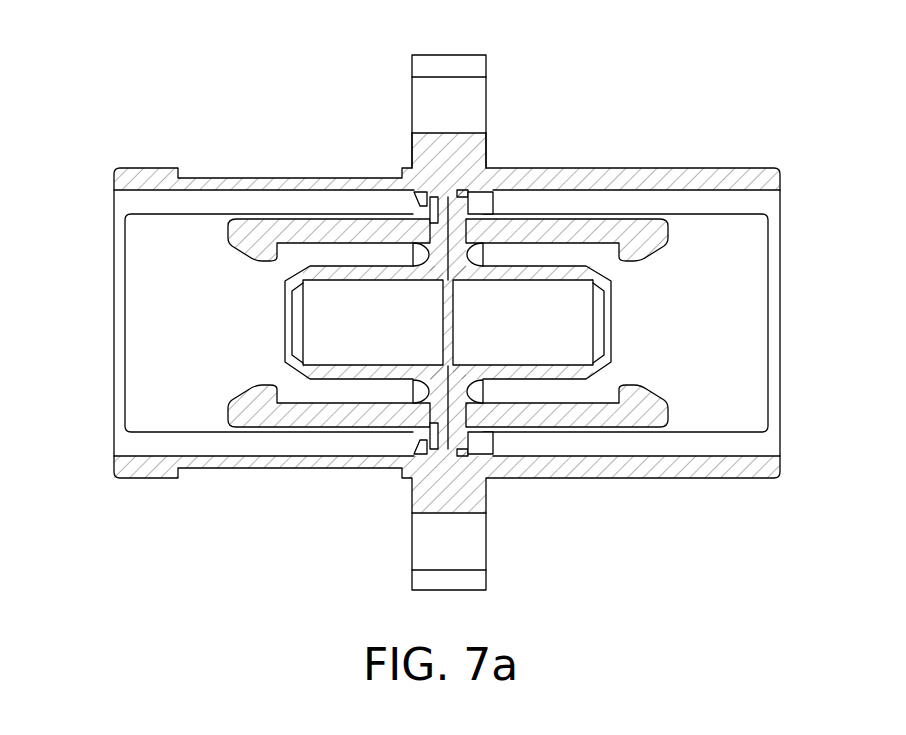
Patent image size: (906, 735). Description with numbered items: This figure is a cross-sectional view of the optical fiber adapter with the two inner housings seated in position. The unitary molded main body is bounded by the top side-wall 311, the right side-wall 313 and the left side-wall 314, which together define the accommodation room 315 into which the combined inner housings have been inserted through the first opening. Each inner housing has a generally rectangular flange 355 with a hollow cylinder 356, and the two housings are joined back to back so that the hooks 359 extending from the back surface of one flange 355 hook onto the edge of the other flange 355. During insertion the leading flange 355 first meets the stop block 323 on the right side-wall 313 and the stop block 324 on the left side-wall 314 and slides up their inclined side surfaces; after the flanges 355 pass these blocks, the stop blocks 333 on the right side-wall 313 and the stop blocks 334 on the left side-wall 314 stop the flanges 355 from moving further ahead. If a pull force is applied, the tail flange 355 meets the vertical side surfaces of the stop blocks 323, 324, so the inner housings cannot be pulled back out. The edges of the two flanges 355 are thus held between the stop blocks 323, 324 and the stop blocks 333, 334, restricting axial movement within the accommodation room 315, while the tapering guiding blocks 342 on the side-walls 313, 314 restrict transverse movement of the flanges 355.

The top side-wall 311 is at (122, 323).
The right side-wall 313 is at (137, 466).
The left side-wall 314 is at (163, 181).
The accommodation room 315 is at (232, 302).
The stop block 323 is at (431, 453).
The stop block 324 is at (425, 195).
The stop block 333 is at (480, 443).
The stop block 334 is at (483, 200).
The guiding block 342 is at (432, 196).
The flange 355 is at (437, 222).
The hollow cylinder 356 is at (297, 363).
The hook 359 is at (489, 175).